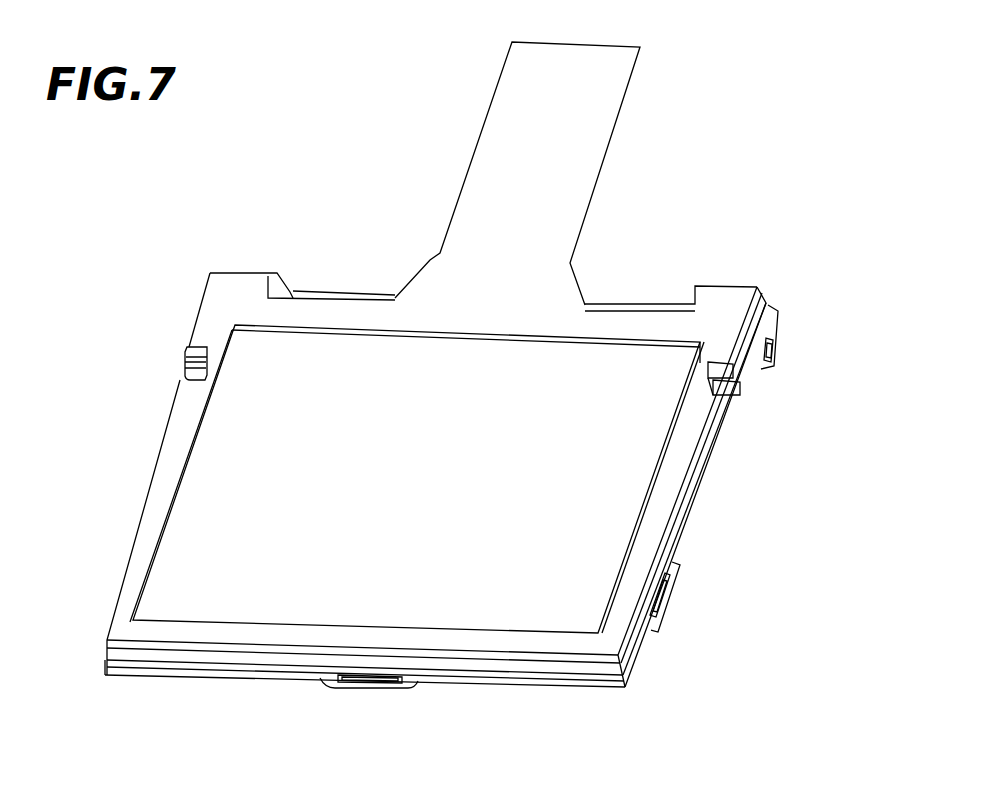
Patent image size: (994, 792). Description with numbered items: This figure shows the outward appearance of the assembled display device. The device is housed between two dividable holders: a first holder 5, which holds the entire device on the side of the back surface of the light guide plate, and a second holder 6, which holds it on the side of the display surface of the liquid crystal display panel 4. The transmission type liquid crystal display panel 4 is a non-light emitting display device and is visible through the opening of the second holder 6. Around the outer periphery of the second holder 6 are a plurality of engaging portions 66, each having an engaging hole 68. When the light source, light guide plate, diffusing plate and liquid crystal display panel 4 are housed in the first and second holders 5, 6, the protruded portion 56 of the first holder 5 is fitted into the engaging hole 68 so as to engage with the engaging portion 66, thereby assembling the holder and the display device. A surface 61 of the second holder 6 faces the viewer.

The liquid crystal display panel 4 is at (348, 433).
The first holder 5 is at (733, 392).
The second holder 6 is at (242, 283).
The protruded portion 56 is at (766, 368).
The display surface of frame 61 is at (585, 522).
The engaging portion 66 is at (777, 333).
The engaging hole 68 is at (773, 350).